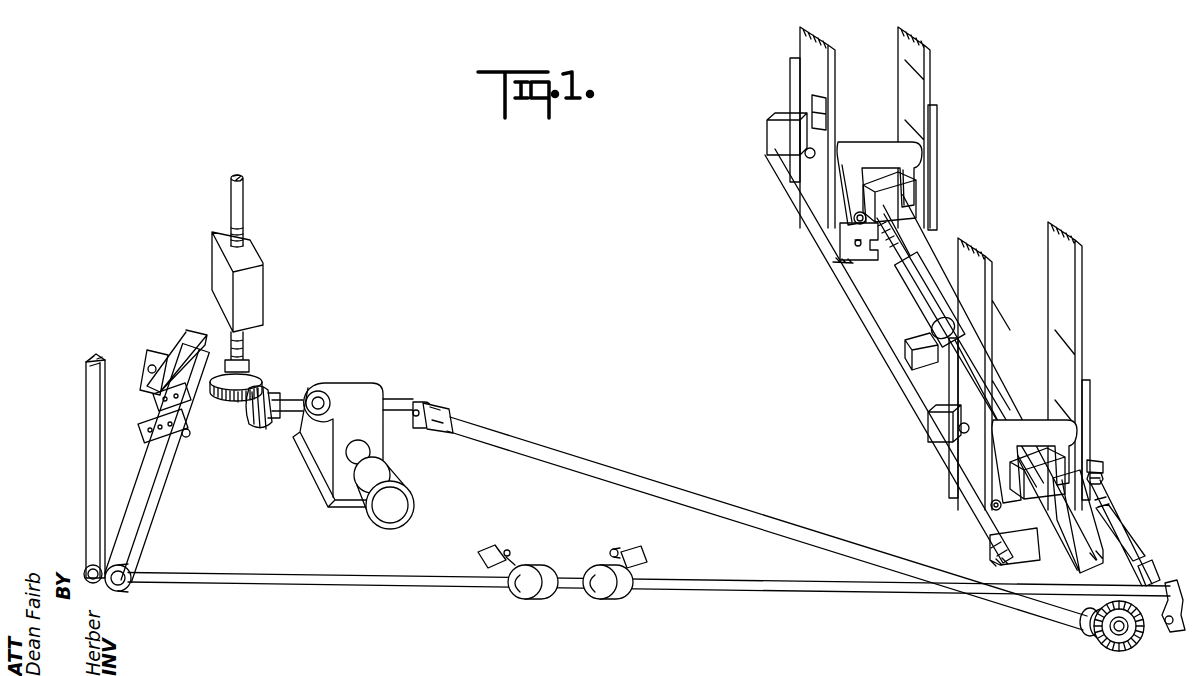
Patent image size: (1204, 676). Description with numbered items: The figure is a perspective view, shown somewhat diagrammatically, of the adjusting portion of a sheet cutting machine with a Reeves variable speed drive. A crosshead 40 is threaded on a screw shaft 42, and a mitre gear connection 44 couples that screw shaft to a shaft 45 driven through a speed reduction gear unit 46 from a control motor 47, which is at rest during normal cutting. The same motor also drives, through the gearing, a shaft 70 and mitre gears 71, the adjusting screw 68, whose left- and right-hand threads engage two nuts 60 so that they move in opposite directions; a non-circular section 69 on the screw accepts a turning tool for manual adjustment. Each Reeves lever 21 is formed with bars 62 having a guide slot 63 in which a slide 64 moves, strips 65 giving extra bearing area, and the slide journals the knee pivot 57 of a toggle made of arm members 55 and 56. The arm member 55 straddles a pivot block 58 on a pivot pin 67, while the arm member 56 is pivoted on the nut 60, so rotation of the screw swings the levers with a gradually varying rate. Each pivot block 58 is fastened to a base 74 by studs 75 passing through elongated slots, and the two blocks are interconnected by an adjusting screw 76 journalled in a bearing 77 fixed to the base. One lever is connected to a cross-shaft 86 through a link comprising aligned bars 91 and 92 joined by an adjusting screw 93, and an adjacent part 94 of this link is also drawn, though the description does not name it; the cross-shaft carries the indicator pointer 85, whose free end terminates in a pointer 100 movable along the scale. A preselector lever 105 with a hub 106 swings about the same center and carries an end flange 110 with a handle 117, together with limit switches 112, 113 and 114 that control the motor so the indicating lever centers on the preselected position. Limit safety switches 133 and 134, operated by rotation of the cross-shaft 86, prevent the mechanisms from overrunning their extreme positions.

The Reeves lever 21 is at (946, 64).
The crosshead 40 is at (252, 300).
The screw shaft 42 is at (244, 211).
The mitre gear connection 44 is at (260, 386).
The shaft 45 is at (278, 424).
The speed reduction gear unit 46 is at (345, 380).
The control motor 47 is at (410, 490).
The arm member 55 is at (842, 178).
The arm member 56 is at (868, 140).
The knee pivot 57 is at (805, 155).
The pivot block 58 is at (840, 245).
The nut 60 is at (890, 202).
The bar 62 is at (834, 37).
The guide slot 63 is at (812, 104).
The slide 64 is at (775, 136).
The strip 65 is at (790, 72).
The pivot pin 67 is at (996, 505).
The screw 68 is at (1078, 521).
The non-circular section 69 is at (937, 257).
The shaft 70 is at (645, 483).
The mitre gears 71 is at (1110, 648).
The base 74 is at (900, 384).
The stud 75 is at (855, 247).
The adjusting screw 76 is at (905, 312).
The bearing 77 is at (905, 350).
The indicator pointer 85 is at (86, 466).
The cross-shaft 86 is at (406, 592).
The bar 91 is at (1095, 466).
The bar 92 is at (1161, 596).
The adjusting screw 93 is at (1095, 478).
The rod 94 is at (1121, 533).
The pointer 100 is at (86, 360).
The preselector lever 105 is at (160, 497).
The hub 106 is at (122, 592).
The end flange 110 is at (170, 355).
The limit switch 112 is at (143, 422).
The limit switch 113 is at (188, 437).
The limit switch 114 is at (186, 393).
The handle 117 is at (148, 368).
The limit safety switch 133 is at (626, 548).
The limit safety switch 134 is at (488, 548).